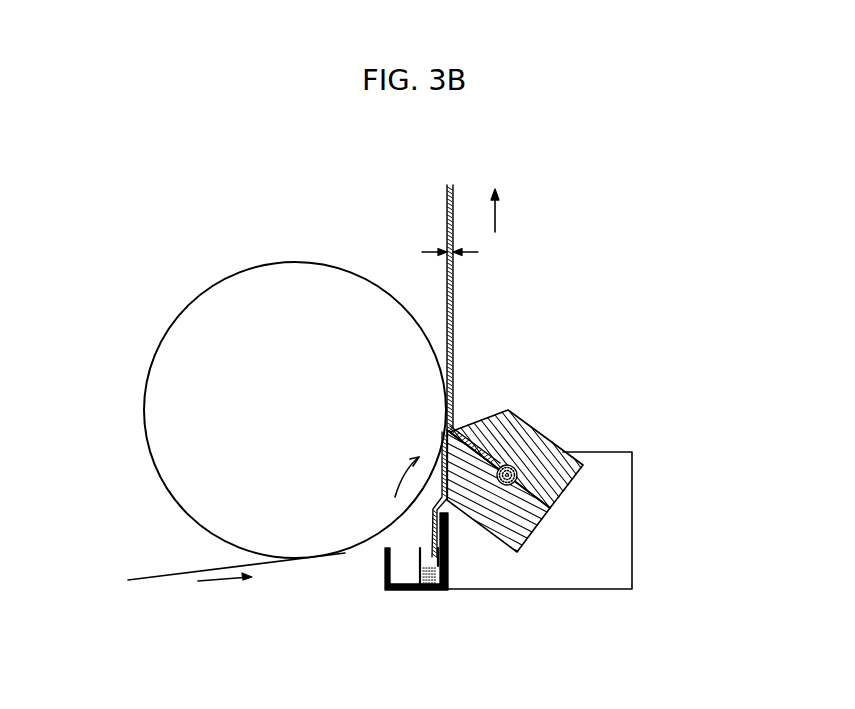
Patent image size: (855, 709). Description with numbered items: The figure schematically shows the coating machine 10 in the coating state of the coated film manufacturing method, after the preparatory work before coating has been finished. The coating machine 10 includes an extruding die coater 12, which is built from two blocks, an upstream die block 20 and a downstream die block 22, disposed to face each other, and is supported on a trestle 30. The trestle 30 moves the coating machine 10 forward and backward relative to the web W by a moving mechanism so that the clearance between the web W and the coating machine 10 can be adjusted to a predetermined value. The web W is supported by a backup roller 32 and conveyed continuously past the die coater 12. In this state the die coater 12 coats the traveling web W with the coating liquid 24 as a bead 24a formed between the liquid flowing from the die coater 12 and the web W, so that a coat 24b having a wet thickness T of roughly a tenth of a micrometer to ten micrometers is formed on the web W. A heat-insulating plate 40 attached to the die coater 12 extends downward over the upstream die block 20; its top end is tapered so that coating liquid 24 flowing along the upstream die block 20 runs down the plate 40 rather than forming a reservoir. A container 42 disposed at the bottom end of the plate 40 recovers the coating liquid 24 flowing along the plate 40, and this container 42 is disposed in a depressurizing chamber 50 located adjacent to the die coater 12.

The coating machine 10 is at (559, 339).
The extruding die coater 12 is at (569, 413).
The upstream die block 20 is at (497, 537).
The downstream die block 22 is at (552, 452).
The coating liquid 24 is at (511, 465).
The bead 24a is at (450, 430).
The coat 24b is at (454, 194).
The trestle 30 is at (632, 556).
The backup roller 32 is at (288, 264).
The heat-insulating plate 40 is at (440, 502).
The container 42 is at (413, 585).
The depressurizing chamber 50 is at (386, 578).
The wet thickness T is at (450, 241).
The web W is at (171, 580).